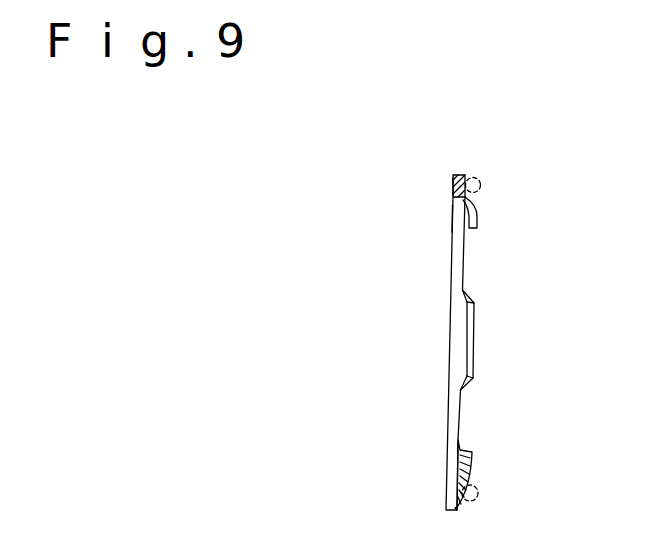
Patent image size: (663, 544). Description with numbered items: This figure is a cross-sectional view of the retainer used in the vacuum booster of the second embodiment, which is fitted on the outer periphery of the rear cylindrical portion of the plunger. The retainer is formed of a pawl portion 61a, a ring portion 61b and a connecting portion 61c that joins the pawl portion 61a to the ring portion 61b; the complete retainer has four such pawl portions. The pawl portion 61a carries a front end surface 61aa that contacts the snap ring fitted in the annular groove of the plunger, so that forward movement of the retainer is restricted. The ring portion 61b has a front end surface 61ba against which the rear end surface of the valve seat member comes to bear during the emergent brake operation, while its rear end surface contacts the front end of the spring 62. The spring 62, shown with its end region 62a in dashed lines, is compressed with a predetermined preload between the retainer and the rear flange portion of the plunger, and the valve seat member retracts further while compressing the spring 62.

The pawl portion 61a is at (470, 222).
The front end surface 61aa is at (452, 217).
The ring portion 61b is at (455, 177).
The front end surface 61ba is at (452, 188).
The connecting portion 61c is at (475, 202).
The spring 62 is at (477, 180).
The end portion of pin 62a is at (472, 173).